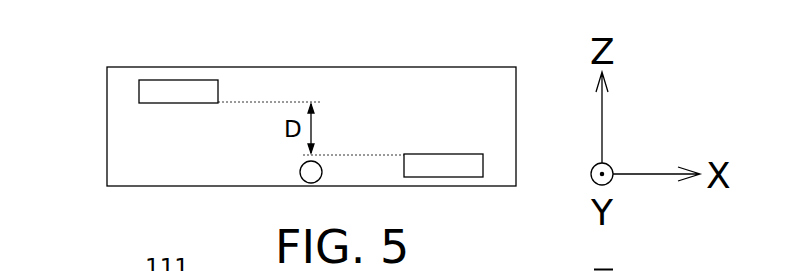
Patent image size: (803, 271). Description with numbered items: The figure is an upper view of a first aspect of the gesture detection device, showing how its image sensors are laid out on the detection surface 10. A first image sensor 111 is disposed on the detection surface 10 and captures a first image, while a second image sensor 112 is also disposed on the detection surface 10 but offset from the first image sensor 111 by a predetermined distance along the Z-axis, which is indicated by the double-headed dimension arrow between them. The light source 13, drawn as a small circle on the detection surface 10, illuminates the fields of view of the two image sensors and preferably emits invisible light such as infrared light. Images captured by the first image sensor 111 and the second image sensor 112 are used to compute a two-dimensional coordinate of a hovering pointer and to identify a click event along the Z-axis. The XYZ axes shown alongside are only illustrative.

The detection surface 10 is at (117, 132).
The first image sensor 111 is at (177, 87).
The second image sensor 112 is at (483, 166).
The light source 13 is at (300, 175).